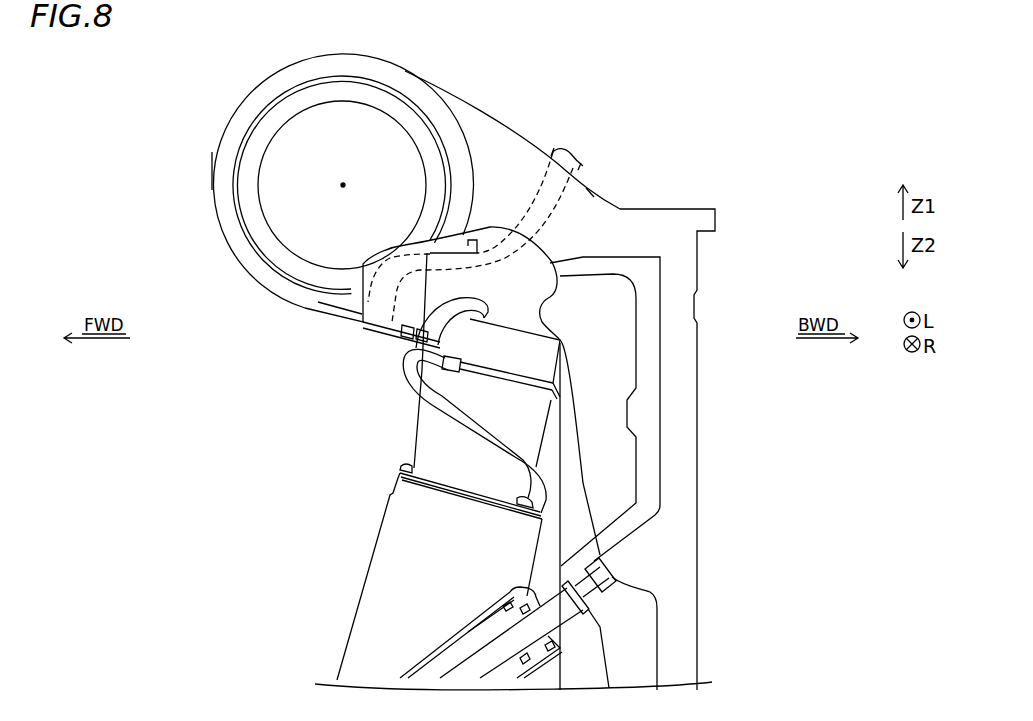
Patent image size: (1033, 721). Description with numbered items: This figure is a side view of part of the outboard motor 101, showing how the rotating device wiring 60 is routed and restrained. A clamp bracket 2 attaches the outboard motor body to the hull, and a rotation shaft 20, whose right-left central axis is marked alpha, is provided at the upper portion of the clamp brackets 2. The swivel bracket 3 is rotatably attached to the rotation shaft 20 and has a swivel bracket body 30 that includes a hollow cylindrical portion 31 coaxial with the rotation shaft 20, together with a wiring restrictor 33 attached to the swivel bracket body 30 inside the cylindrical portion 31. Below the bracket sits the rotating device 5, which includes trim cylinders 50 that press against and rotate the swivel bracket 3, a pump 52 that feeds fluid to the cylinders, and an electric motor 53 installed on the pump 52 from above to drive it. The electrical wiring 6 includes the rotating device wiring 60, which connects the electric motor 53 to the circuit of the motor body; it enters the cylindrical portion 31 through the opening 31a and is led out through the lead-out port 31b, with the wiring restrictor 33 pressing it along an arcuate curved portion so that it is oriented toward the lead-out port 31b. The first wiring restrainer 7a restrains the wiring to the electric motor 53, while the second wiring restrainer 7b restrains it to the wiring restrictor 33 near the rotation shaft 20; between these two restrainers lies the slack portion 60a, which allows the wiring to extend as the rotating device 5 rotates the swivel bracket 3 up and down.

The outboard motor 101 is at (151, 67).
The cylindrical portion 31 is at (254, 92).
The swivel bracket body 30 is at (200, 160).
The swivel bracket 3 is at (200, 139).
The clamp bracket 2 is at (260, 254).
The rotation shaft 20 is at (266, 194).
The wiring restrictor 33 is at (477, 240).
The electrical wiring 6 is at (562, 139).
The rotating device wiring 60 is at (571, 166).
The lead-out port 31b is at (590, 194).
The slack portion 60a is at (486, 308).
The opening 31a is at (398, 338).
The first wiring restrainer 7a is at (480, 372).
The second wiring restrainer 7b is at (425, 340).
The rotating device 5 is at (402, 442).
The electric motor 53 is at (418, 462).
The pump 52 is at (378, 550).
The trim cylinder 50 is at (556, 618).